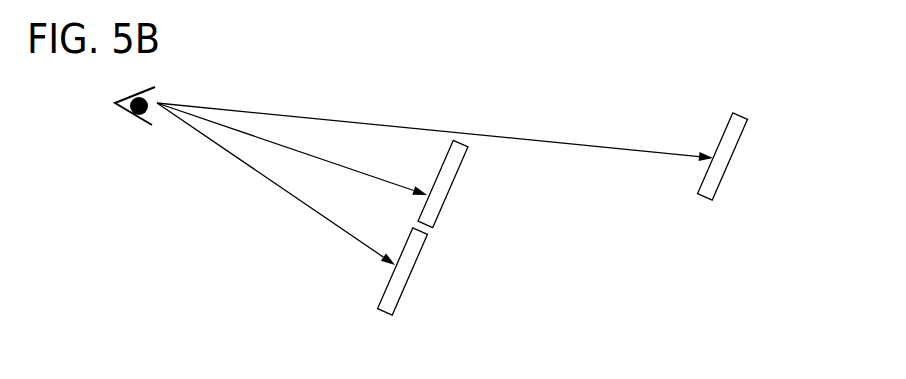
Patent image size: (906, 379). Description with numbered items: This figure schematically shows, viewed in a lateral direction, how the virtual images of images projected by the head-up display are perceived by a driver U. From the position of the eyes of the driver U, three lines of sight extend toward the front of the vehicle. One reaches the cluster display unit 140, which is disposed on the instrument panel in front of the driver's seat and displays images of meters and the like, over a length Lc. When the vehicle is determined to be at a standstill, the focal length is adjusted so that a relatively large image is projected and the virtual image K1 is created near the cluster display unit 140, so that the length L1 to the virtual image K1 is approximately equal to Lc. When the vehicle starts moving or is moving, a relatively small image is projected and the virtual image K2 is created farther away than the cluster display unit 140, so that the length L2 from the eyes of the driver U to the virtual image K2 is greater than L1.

The driver U is at (120, 106).
The length to the virtual image K1 L1 is at (292, 149).
The length from the position of the eyes of the driver to the virtual image K2 L2 is at (435, 132).
The length from the position of the eyes of the driver to the cluster display unit Lc is at (276, 184).
The virtual image K1 is at (434, 219).
The virtual image K2 is at (732, 163).
The cluster display unit 140 is at (408, 285).